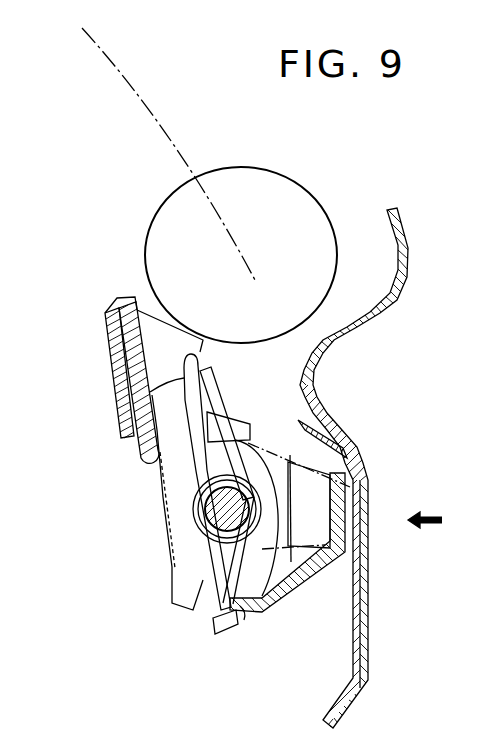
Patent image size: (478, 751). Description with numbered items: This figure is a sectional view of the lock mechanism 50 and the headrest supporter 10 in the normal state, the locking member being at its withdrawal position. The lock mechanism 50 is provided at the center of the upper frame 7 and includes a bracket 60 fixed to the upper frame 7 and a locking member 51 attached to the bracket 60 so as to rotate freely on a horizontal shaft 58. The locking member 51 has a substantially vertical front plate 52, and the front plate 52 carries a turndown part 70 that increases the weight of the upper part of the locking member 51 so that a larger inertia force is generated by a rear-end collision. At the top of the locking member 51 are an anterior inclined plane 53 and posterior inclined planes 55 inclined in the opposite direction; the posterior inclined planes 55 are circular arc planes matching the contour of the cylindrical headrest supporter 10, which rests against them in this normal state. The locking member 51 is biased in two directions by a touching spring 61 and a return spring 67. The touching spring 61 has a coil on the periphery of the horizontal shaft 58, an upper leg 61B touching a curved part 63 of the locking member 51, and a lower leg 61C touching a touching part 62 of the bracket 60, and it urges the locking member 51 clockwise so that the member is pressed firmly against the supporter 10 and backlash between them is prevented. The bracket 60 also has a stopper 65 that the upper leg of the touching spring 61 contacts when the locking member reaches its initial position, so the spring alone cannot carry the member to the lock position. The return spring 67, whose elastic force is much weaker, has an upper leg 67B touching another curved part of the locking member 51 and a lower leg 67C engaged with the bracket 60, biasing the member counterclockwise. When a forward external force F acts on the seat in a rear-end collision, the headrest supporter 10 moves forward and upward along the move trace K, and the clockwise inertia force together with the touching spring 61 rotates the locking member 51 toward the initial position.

The upper frame 7 is at (398, 300).
The headrest supporter 10 is at (172, 193).
The lock mechanism 50 is at (95, 602).
The locking member 51 is at (118, 383).
The front plate 52 is at (124, 437).
The anterior inclined plane 53 is at (112, 306).
The posterior inclined planes 55 is at (203, 340).
The horizontal shaft 58 is at (196, 522).
The bracket 60 is at (312, 467).
The touching spring 61 is at (200, 571).
The upper leg 61B is at (123, 420).
The lower leg 61C is at (230, 640).
The touching part 62 is at (247, 610).
The curved part 63 is at (193, 477).
The stopper 65 is at (244, 410).
The return spring 67 is at (288, 598).
The upper leg 67B is at (222, 396).
The lower leg 67C is at (210, 618).
The turndown part 70 is at (110, 357).
The move trace K is at (152, 112).
The external force F is at (425, 509).